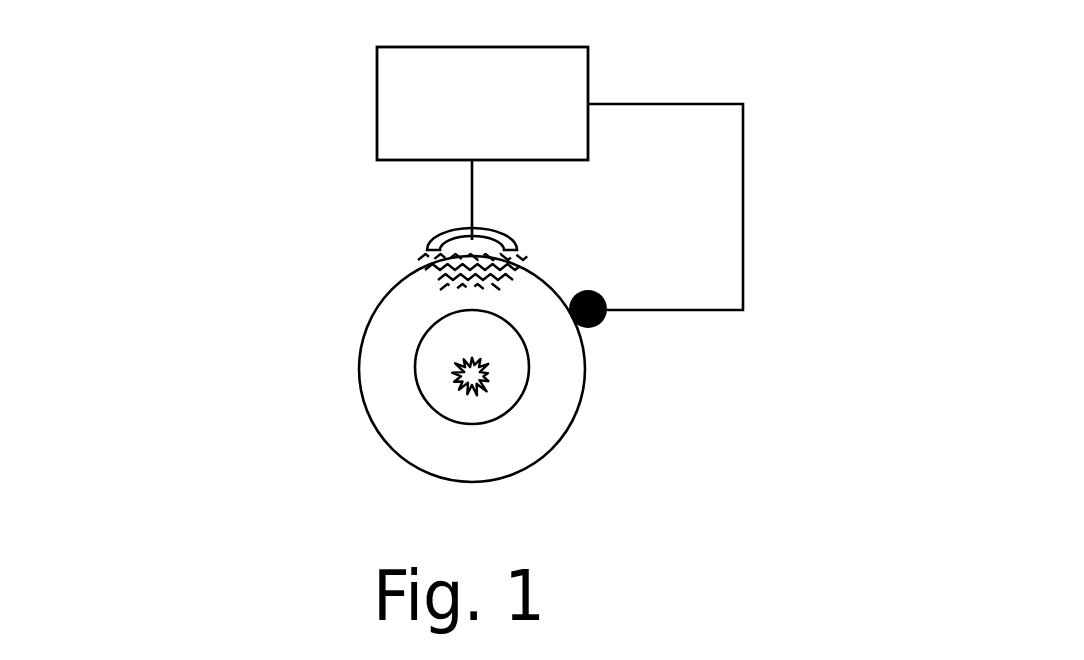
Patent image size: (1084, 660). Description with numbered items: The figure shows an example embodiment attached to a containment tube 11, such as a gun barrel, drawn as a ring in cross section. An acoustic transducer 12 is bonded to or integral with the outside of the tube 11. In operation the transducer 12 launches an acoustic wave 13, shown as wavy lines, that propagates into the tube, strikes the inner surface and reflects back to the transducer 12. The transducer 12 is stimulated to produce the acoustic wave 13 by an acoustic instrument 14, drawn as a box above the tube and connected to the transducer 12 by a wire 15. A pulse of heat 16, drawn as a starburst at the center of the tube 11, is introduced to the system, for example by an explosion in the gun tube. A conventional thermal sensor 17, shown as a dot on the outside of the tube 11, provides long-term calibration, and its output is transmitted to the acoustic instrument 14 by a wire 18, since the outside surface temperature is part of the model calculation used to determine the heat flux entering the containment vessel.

The containment tube 11 is at (366, 323).
The acoustic transducer 12 is at (435, 238).
The acoustic wave 13 is at (522, 271).
The acoustic instrument 14 is at (377, 85).
The wire 15 is at (470, 197).
The pulse of heat 16 is at (454, 385).
The thermal sensor 17 is at (598, 324).
The wire 18 is at (743, 170).